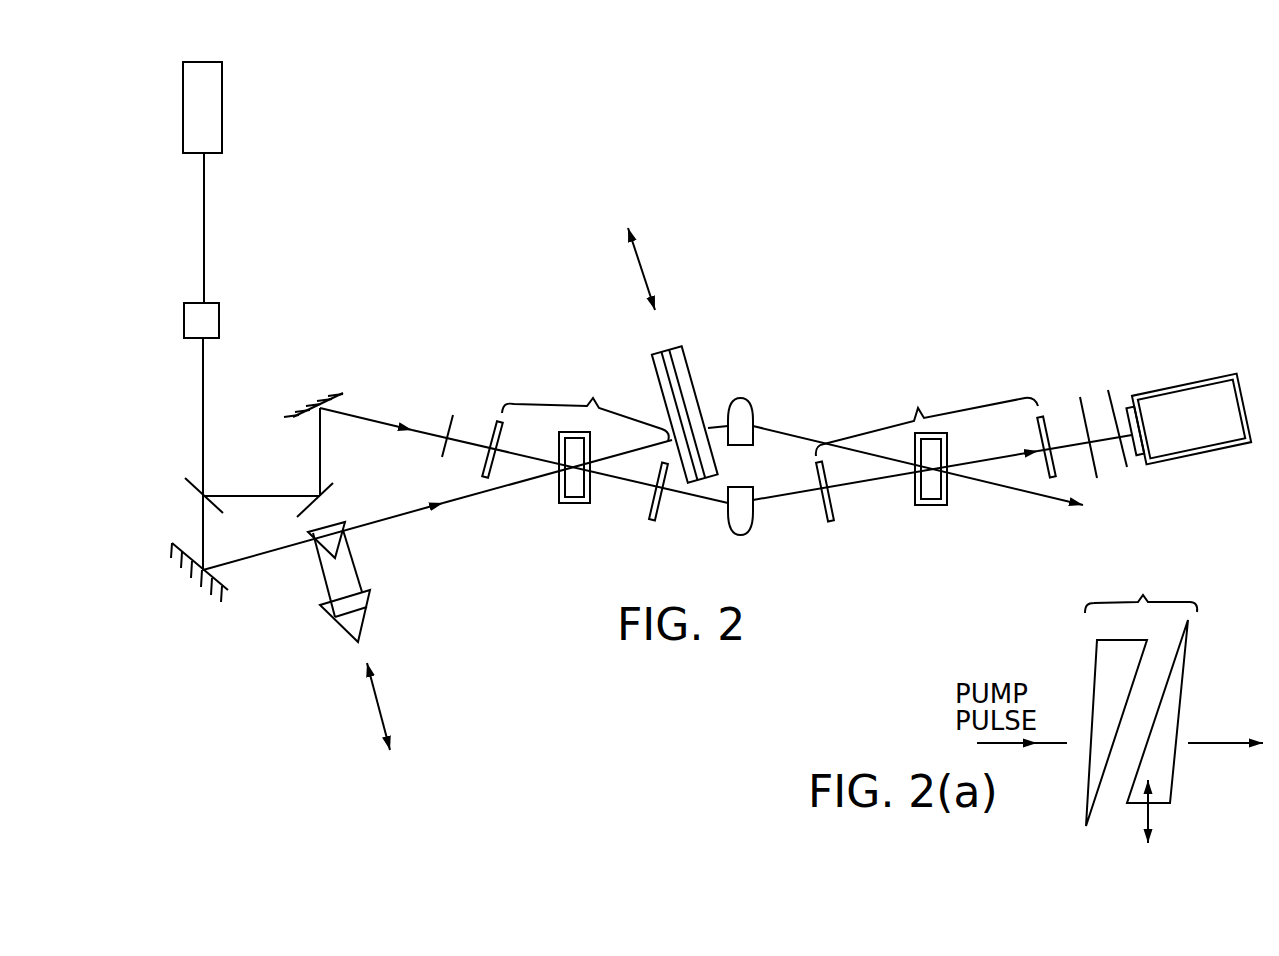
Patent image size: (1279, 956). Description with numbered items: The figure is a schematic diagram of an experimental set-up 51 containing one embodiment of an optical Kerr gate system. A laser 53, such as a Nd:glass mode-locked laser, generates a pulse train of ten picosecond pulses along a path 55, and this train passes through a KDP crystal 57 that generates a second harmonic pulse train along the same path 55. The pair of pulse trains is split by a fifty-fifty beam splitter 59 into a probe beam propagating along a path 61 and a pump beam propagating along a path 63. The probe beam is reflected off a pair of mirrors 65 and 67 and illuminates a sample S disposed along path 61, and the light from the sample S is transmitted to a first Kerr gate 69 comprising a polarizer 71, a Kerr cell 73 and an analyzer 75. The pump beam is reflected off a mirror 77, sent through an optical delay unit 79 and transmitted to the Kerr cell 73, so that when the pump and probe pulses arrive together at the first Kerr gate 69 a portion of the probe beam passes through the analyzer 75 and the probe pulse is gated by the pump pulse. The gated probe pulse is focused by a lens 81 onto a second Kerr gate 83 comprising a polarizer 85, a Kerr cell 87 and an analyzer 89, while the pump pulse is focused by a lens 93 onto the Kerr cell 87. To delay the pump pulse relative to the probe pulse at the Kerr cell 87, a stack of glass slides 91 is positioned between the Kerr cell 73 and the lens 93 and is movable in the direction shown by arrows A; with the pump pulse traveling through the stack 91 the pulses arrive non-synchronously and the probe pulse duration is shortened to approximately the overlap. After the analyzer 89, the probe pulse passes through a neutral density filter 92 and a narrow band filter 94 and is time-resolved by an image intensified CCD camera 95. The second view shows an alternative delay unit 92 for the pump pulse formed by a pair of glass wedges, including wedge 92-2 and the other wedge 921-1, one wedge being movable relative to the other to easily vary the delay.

In FIG. 2, the experimental set-up 51 is at (789, 268).
In FIG. 2, the laser 53 is at (218, 78).
In FIG. 2, the path 55 is at (200, 239).
In FIG. 2, the potassium dihydrate phosphate (KDP) crystal 57 is at (217, 327).
In FIG. 2, the 50/50 beam splitter 59 is at (192, 484).
In FIG. 2, the path 61 is at (280, 495).
In FIG. 2, the path 63 is at (203, 522).
In FIG. 2, the mirror 65 is at (328, 492).
In FIG. 2, the mirror 67 is at (338, 395).
In FIG. 2, the first Kerr gate 69 is at (585, 404).
In FIG. 2, the polarizer 71 is at (486, 466).
In FIG. 2, the Kerr cell 73 is at (592, 500).
In FIG. 2, the analyzer 75 is at (650, 512).
In FIG. 2, the mirror 77 is at (212, 586).
In FIG. 2, the optical delay unit 79 is at (357, 557).
In FIG. 2, the lens 81 is at (741, 537).
In FIG. 2, the second Kerr gate 83 is at (927, 413).
In FIG. 2, the polarizer 85 is at (833, 515).
In FIG. 2, the Kerr cell 87 is at (948, 500).
In FIG. 2, the analyzer 89 is at (1043, 472).
In FIG. 2, the stack of glass slides 91 is at (694, 388).
In FIG. 2, the neutral density filter 92 is at (1084, 410).
In FIG. 2A, the neutral density filter 92 is at (1162, 841).
In FIG. 2, the lens 93 is at (746, 407).
In FIG. 2, the narrow band filter 94 is at (1125, 463).
In FIG. 2, the image intensified CCD camera 95 is at (1212, 437).
In FIG. 2A, the glass wedge 92-2 is at (1166, 789).
In FIG. 2A, the first wedge 921-1 is at (1086, 818).
In FIG. 2, the sample S is at (449, 432).
In FIG. 2, the arrows A is at (641, 269).